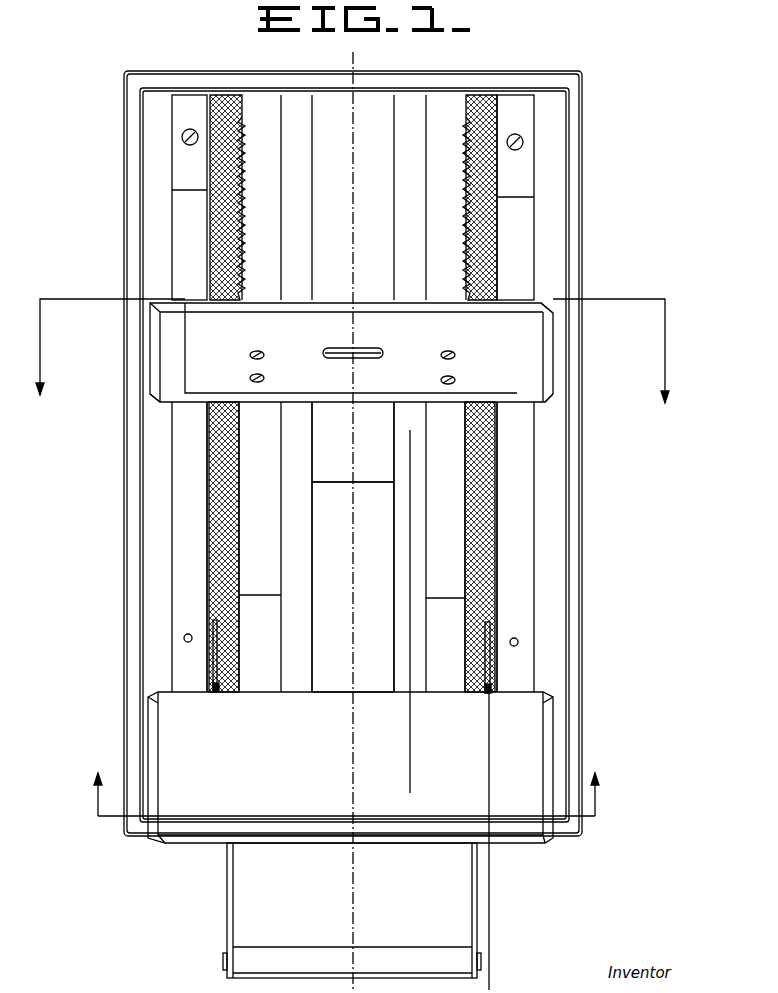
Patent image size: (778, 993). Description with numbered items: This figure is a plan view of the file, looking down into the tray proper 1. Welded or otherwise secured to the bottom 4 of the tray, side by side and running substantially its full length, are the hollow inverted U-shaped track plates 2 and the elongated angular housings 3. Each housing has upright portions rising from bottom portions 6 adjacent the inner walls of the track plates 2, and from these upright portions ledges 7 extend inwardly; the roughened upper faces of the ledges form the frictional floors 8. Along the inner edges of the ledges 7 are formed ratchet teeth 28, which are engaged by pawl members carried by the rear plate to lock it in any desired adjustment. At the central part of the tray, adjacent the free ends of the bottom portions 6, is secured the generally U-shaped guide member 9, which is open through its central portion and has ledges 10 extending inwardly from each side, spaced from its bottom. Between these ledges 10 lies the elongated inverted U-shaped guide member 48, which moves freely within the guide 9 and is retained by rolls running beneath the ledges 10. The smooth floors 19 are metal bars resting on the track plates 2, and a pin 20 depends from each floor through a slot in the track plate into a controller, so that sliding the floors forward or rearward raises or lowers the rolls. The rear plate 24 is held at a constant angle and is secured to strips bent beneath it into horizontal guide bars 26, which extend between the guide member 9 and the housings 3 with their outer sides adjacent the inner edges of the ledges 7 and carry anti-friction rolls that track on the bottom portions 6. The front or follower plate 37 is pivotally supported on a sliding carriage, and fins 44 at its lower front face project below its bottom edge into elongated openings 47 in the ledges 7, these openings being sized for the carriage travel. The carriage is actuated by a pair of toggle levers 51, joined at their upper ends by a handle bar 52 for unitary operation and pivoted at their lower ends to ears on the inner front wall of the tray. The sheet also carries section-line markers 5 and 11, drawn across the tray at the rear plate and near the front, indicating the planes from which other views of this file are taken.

The tray proper 1 is at (124, 232).
The hollow elongated track plates 2 is at (300, 52).
The elongated angular housings 3 is at (365, 430).
The bottom 4 is at (243, 280).
The section line 5 is at (354, 341).
The bottom portions 6 is at (406, 312).
The ledges 7 is at (207, 535).
The frictional floors 8 is at (230, 212).
The guide member 9 is at (353, 442).
The ledges 10 is at (353, 393).
The section line 11 is at (346, 806).
The smooth floors 19 is at (515, 887).
The pin 20 is at (184, 639).
The rear plate 24 is at (351, 352).
The horizontal guide bars 26 is at (352, 547).
The ratchet teeth 28 is at (243, 256).
The front or follower plate 37 is at (350, 767).
The fins 44 is at (220, 686).
The elongated openings 47 is at (215, 658).
The elongated guide member 48 is at (353, 587).
The toggle levers 51 is at (237, 906).
The handle bar 52 is at (381, 947).